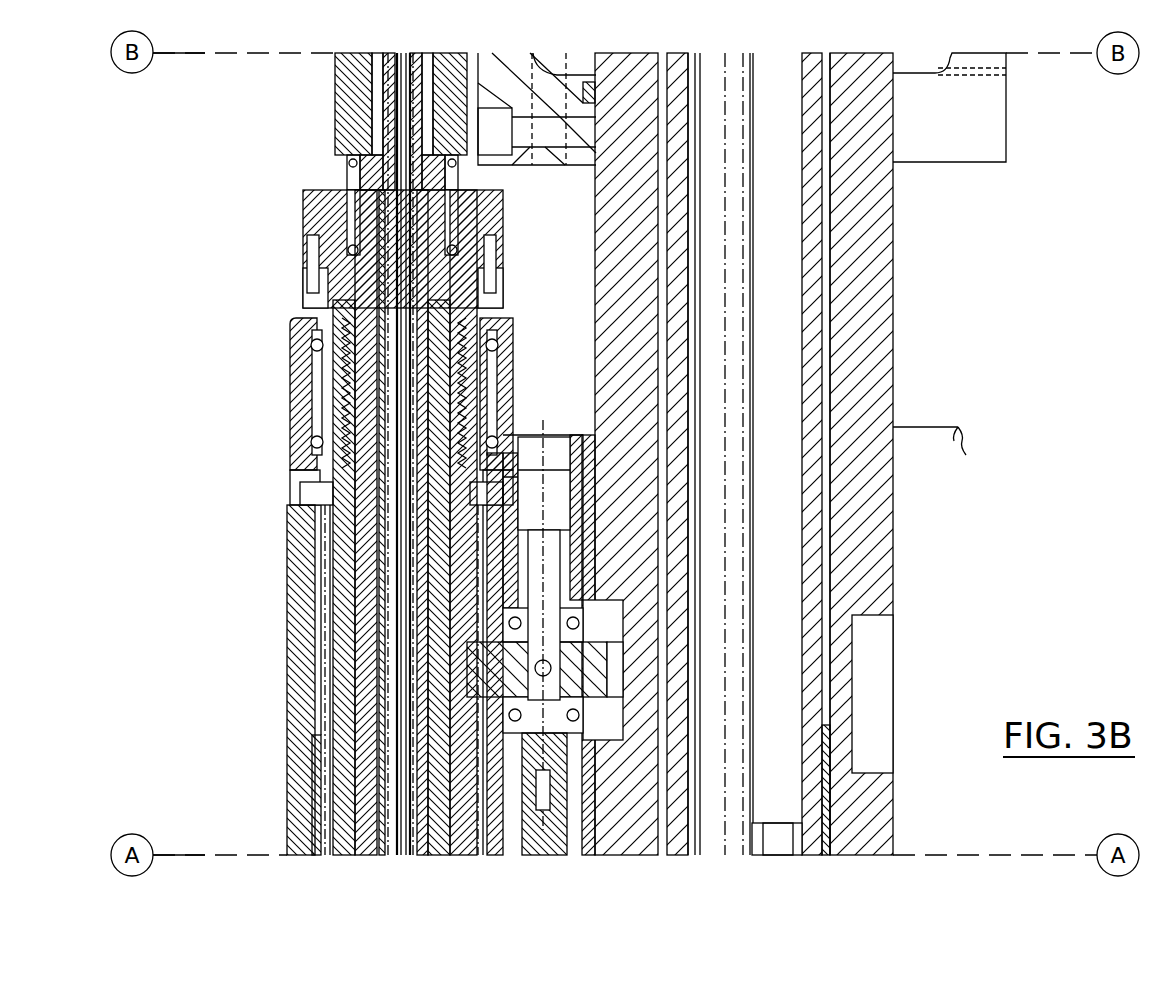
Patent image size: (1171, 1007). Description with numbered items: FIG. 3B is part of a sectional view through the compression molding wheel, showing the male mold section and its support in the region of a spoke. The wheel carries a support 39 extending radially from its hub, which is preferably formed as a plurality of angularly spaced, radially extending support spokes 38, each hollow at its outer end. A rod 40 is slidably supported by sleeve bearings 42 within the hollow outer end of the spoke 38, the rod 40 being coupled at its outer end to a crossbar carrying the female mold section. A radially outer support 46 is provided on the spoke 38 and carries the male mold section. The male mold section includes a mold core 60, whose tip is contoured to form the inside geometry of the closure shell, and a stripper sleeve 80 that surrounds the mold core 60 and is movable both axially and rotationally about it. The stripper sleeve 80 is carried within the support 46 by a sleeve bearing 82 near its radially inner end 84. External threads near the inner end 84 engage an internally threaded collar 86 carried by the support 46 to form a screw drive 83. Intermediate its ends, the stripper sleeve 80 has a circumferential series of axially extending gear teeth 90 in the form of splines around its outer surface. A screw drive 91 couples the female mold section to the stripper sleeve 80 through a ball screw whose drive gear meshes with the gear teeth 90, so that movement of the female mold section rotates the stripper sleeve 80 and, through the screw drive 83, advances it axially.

The support spoke 38 is at (878, 345).
The support 39 is at (897, 284).
The rod 40 is at (812, 408).
The sleeve bearing 42 is at (828, 802).
The radially outer support 46 is at (292, 637).
The mold core 60 is at (352, 711).
The stripper sleeve 80 is at (345, 775).
The sleeve bearing 82 is at (315, 820).
The screw drive 83 is at (342, 373).
The inner end of the stripper sleeve 84 is at (352, 385).
The internally threaded collar 86 is at (315, 425).
The gear teeth 90 is at (322, 552).
The screw drive 91 is at (603, 648).